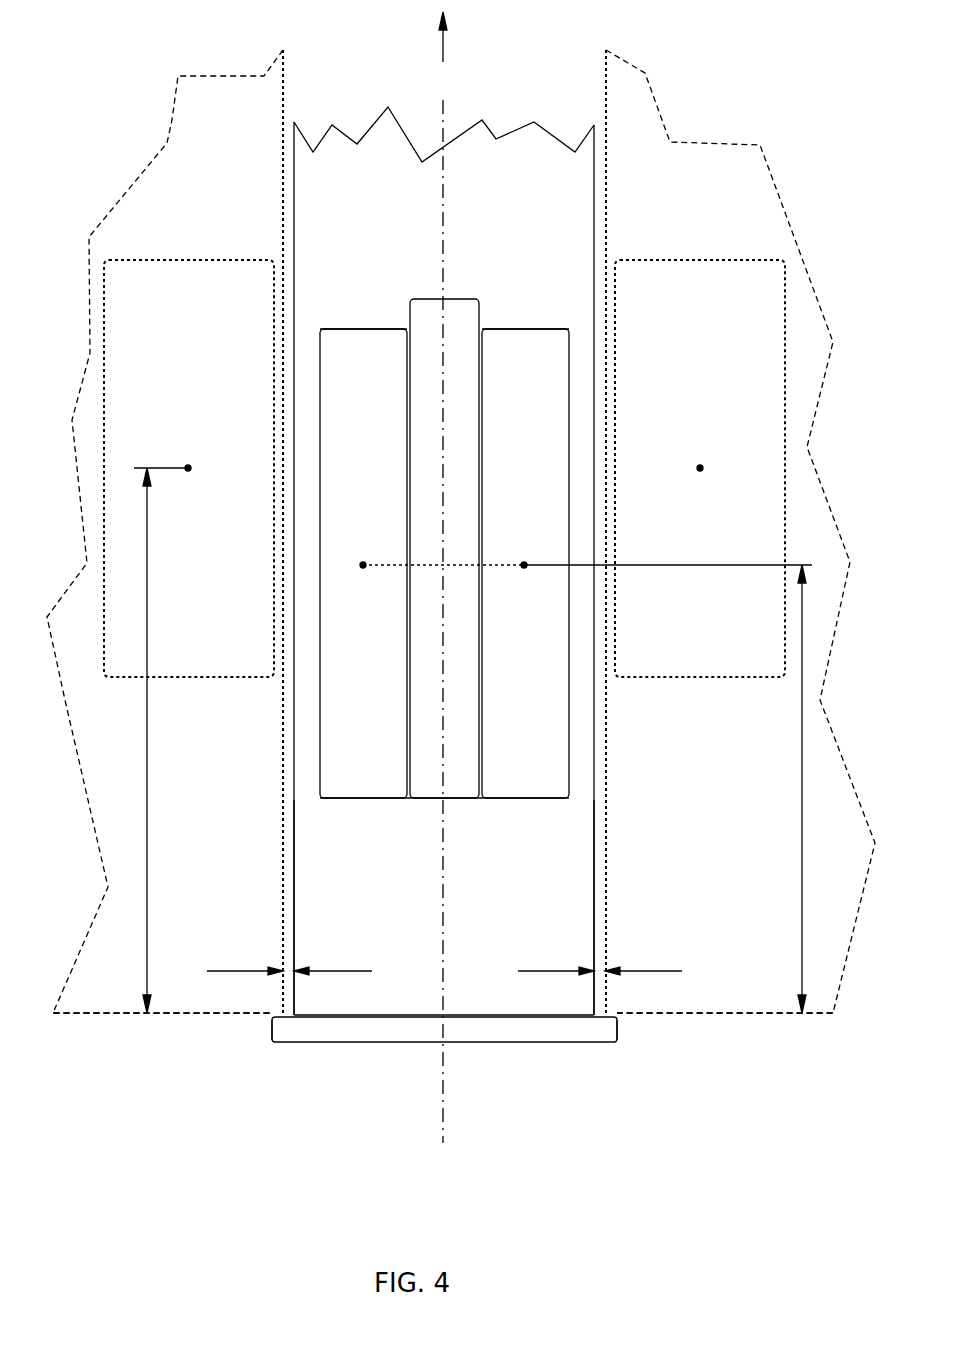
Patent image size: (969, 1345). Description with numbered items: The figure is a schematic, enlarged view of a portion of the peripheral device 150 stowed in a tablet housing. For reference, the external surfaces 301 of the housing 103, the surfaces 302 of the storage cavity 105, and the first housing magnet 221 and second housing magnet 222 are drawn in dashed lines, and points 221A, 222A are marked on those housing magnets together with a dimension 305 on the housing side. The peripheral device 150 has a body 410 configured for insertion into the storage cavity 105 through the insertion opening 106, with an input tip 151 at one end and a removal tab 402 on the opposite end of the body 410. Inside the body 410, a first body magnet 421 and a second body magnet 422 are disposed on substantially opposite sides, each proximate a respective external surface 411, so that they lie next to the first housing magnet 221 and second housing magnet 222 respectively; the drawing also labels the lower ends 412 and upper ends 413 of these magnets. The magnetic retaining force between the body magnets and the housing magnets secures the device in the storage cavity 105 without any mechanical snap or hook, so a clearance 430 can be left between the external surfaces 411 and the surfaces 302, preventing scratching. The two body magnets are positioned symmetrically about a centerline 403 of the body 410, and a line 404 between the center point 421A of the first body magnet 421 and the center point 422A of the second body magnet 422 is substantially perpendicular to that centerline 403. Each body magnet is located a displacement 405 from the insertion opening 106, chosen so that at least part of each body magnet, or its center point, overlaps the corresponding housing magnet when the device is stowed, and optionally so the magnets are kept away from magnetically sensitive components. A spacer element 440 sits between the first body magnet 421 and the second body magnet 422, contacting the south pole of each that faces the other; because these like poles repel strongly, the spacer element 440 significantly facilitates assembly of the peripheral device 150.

The housing 103 is at (733, 98).
The storage cavity 105 is at (509, 111).
The insertion opening 106 is at (458, 1011).
The peripheral device 150 is at (542, 1072).
The input tip 151 is at (443, 54).
The first housing magnet 221 is at (163, 442).
The magnetization direction of first outer magnet 221A is at (188, 471).
The second housing magnet 222 is at (675, 442).
The magnetization direction of second outer magnet 222A is at (700, 471).
The external surfaces 301 is at (195, 1018).
The surfaces of storage cavity 302 is at (283, 97).
The distance from first outer magnet to bottom 305 is at (148, 780).
The removal tab 402 is at (256, 1031).
The centerline 403 is at (442, 1088).
The line 404 is at (375, 568).
The displacement 405 is at (801, 780).
The body 410 is at (418, 947).
The external surfaces 411 is at (295, 833).
The lower ends of inner magnets 412 is at (368, 800).
The upper ends of inner magnets 413 is at (362, 327).
The first body magnet 421 is at (347, 441).
The center point 421A is at (362, 563).
The second body magnet 422 is at (492, 441).
The center point 422A is at (525, 563).
The clearance 430 is at (243, 968).
The spacer element 440 is at (419, 441).